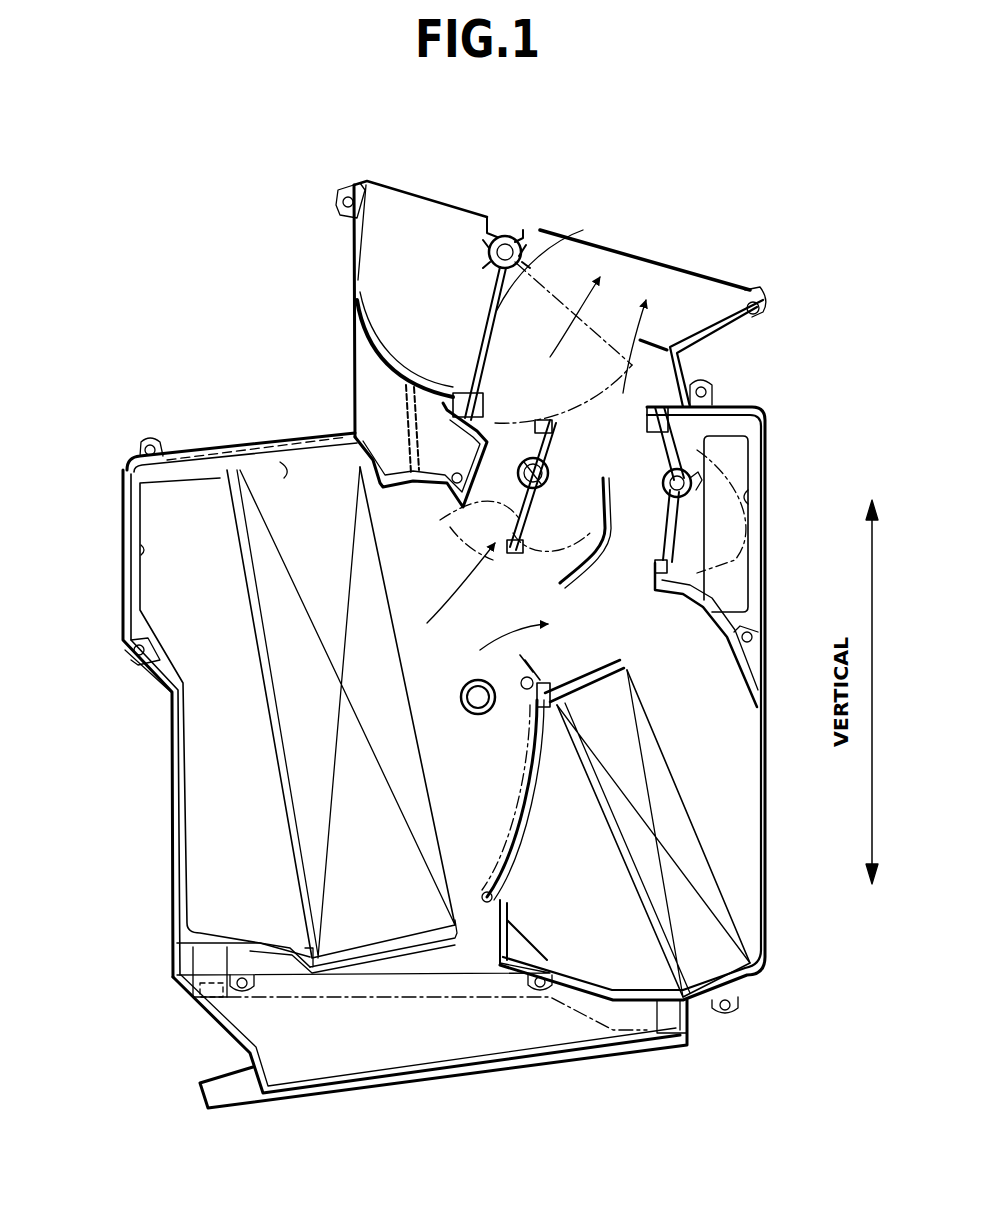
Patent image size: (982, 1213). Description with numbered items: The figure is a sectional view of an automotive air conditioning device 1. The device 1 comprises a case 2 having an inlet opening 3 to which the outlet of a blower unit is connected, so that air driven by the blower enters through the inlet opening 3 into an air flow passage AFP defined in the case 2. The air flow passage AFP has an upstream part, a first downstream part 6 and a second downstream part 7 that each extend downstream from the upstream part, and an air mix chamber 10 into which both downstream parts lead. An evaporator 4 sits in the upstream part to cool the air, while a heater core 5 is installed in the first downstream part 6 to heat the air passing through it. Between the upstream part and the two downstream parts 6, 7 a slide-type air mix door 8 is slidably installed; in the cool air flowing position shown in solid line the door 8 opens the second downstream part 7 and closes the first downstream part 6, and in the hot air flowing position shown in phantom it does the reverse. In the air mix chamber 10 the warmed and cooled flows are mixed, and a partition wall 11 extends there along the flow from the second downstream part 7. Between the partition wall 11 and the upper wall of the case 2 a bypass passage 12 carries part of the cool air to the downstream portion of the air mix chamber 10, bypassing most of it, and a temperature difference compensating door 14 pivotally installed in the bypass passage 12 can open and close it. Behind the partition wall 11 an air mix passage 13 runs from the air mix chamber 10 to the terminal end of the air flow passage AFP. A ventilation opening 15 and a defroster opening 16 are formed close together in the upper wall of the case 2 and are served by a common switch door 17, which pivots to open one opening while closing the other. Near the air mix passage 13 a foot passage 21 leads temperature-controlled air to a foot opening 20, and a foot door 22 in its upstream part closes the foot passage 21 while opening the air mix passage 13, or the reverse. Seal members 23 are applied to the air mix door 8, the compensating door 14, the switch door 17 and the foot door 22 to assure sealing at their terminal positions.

The automotive air conditioning device 1 is at (114, 484).
The case 2 is at (124, 626).
The inlet opening 3 is at (140, 550).
The evaporator 4 is at (300, 783).
The heater core 5 is at (653, 907).
The first downstream part 6 is at (578, 818).
The second downstream part 7 is at (545, 595).
The slide-type air mix door 8 is at (527, 778).
The air mix chamber 10 is at (636, 572).
The partition wall 11 is at (577, 568).
The bypass passage 12 is at (512, 505).
The air mix passage 13 is at (652, 515).
The temperature difference compensating door 14 is at (670, 477).
The ventilation opening 15 is at (692, 290).
The defroster opening 16 is at (432, 220).
The switch door 17 is at (522, 268).
The foot opening 20 is at (748, 497).
The foot passage 21 is at (745, 422).
The foot door 22 is at (668, 374).
The seal members 23 is at (455, 392).
The air flow passage AFP is at (285, 467).